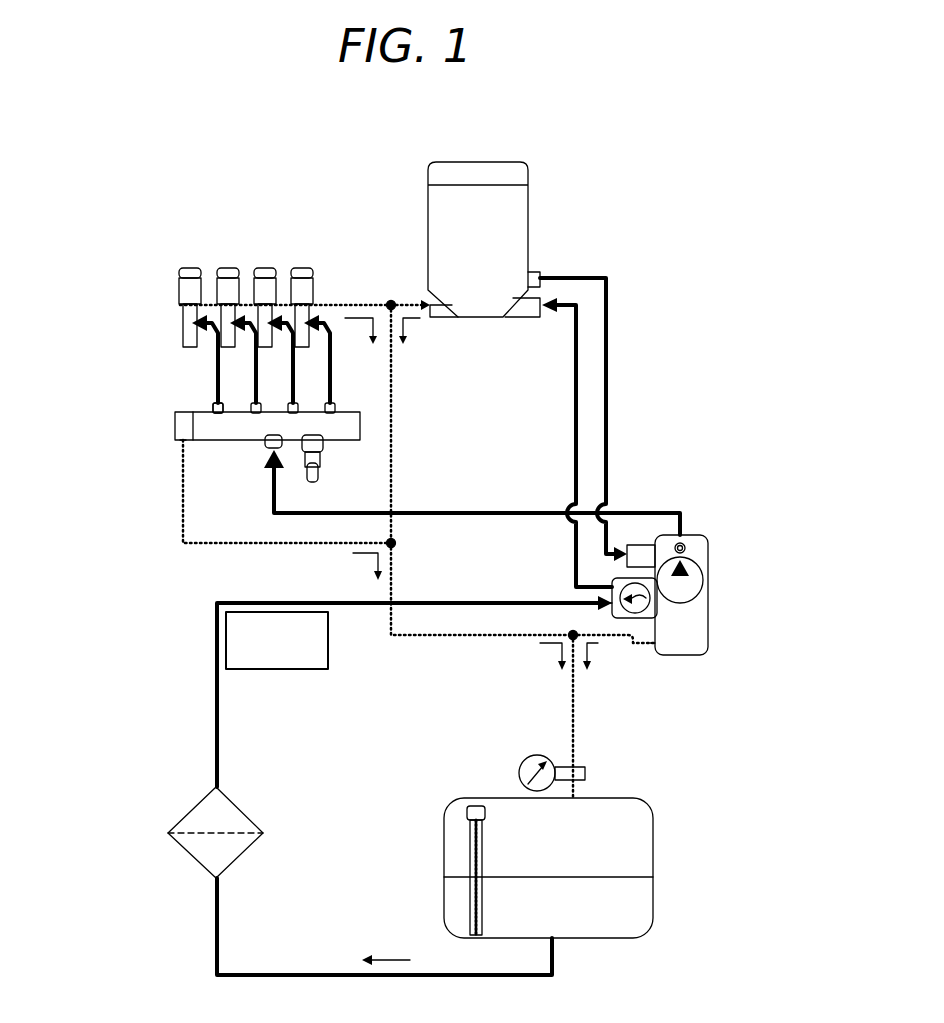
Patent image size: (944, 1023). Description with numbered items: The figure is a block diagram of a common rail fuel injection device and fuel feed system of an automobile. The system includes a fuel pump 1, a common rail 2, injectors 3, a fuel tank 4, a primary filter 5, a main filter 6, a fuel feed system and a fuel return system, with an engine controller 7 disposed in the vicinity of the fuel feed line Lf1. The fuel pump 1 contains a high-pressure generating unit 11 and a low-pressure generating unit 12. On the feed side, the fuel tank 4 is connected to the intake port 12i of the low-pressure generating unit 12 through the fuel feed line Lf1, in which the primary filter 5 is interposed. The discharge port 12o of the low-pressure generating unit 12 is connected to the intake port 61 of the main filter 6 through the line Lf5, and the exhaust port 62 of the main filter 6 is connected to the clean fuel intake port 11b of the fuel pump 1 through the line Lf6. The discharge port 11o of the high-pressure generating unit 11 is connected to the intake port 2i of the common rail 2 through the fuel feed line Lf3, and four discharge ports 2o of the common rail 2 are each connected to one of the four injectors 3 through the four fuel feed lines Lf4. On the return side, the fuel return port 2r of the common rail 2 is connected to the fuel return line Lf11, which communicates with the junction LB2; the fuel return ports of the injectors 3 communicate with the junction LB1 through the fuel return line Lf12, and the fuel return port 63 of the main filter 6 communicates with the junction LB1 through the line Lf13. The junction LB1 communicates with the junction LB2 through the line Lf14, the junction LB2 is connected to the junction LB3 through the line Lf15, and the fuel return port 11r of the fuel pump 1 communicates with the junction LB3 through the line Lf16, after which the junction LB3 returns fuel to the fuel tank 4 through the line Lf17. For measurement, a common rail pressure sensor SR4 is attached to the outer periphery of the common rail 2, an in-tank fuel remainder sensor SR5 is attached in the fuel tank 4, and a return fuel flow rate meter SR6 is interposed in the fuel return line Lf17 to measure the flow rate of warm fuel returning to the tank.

The fuel pump 1 is at (783, 517).
The common rail 2 is at (177, 412).
The discharge ports of the common rail 2o is at (213, 402).
The intake port of the common rail 2i is at (263, 442).
The fuel return port of the common rail 2r is at (181, 445).
The injectors 3 is at (180, 262).
The fuel tank 4 is at (650, 833).
The primary filter 5 is at (183, 819).
The main filter 6 is at (529, 171).
The intake port of the main filter 61 is at (518, 318).
The exhaust port of the main filter 62 is at (541, 273).
The fuel return port of the main filter 63 is at (428, 318).
The engine controller 7 is at (298, 672).
The high-pressure generating unit 11 is at (703, 562).
The clean fuel intake port 11b is at (619, 550).
The discharge port of the high-pressure generating unit 11o is at (688, 545).
The fuel return port of the fuel pump 11r is at (624, 644).
The low-pressure generating unit 12 is at (637, 607).
The discharge port of the low-pressure generating unit 12o is at (600, 572).
The intake port of the low-pressure generating unit 12i is at (598, 597).
The fuel feed line Lf1 is at (257, 974).
The fuel feed line Lf3 is at (438, 513).
The fuel feed lines Lf4 is at (330, 356).
The line Lf5 is at (576, 378).
The line Lf6 is at (610, 340).
The fuel return line Lf11 is at (287, 491).
The fuel return line Lf12 is at (352, 303).
The line Lf13 is at (410, 303).
The line Lf14 is at (393, 478).
The line Lf15 is at (408, 637).
The line Lf16 is at (601, 638).
The fuel return line Lf17 is at (572, 735).
The junction LB1 is at (384, 298).
The junction LB2 is at (404, 540).
The junction LB3 is at (562, 646).
The common rail pressure sensor SR4 is at (325, 458).
The in-tank fuel remainder sensor SR5 is at (468, 838).
The return fuel flow rate meter SR6 is at (520, 763).